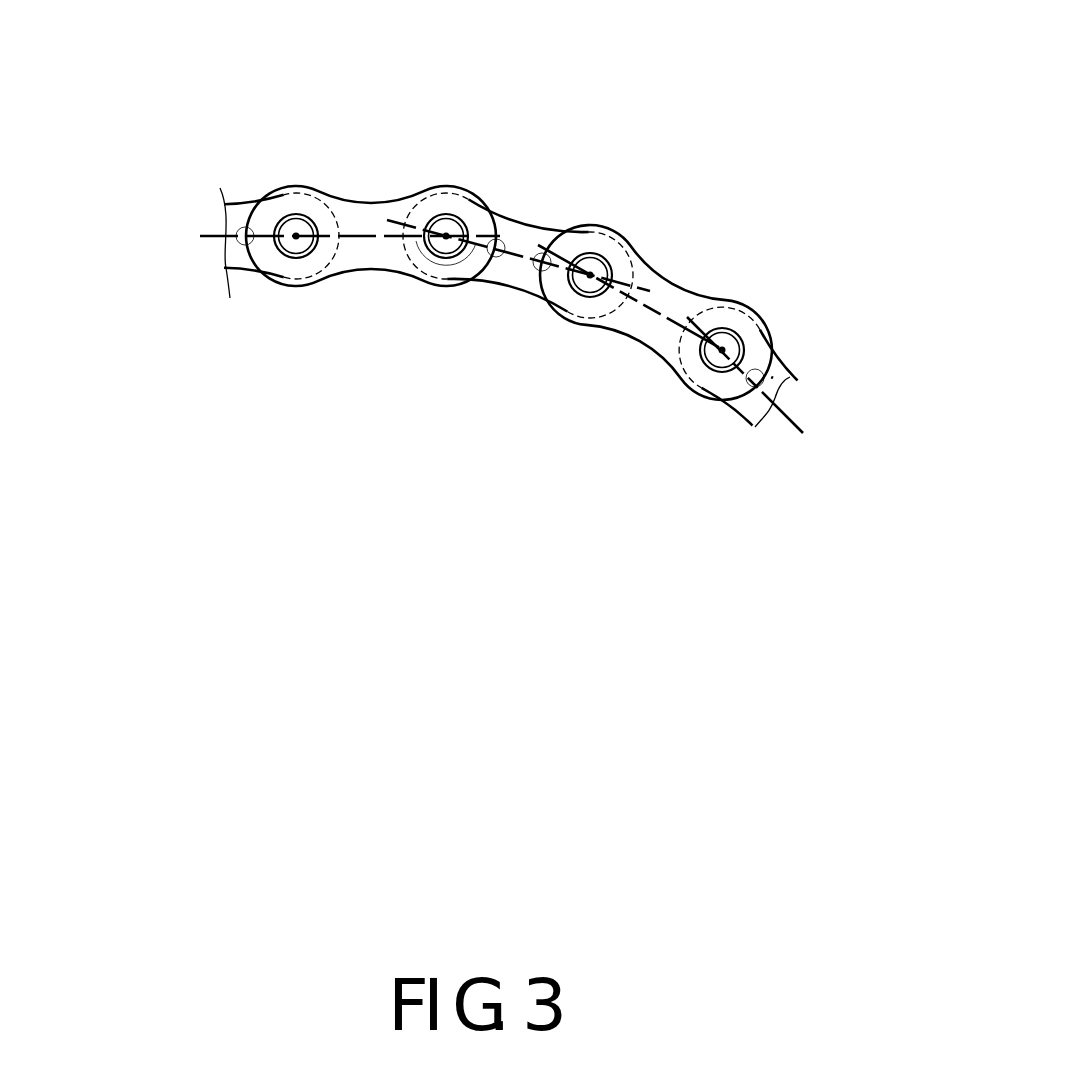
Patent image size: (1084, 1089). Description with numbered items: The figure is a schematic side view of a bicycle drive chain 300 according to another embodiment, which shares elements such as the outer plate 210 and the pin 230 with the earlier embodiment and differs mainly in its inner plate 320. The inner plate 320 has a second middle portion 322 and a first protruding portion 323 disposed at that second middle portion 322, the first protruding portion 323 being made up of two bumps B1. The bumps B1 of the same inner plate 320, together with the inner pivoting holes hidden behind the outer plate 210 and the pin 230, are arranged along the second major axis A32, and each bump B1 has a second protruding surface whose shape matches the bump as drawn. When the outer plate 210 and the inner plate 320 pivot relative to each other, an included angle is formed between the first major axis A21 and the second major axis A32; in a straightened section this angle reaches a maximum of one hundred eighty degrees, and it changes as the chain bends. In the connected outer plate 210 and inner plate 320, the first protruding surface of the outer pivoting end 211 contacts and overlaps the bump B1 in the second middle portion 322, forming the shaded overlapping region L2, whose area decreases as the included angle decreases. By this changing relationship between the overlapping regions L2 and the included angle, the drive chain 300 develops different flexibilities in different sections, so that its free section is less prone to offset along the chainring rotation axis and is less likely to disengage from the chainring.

The drive chain 300 is at (145, 94).
The outer plate 210 is at (352, 200).
The outer pivoting end 211 is at (497, 224).
The pin 230 is at (297, 214).
The inner plate 320 is at (547, 333).
The second middle portion 322 is at (490, 285).
The first protruding portion 323 is at (668, 10).
The bump B1 is at (513, 235).
The first major axis A21 is at (353, 240).
The second major axis A32 is at (633, 268).
The overlapping region L2 is at (249, 270).